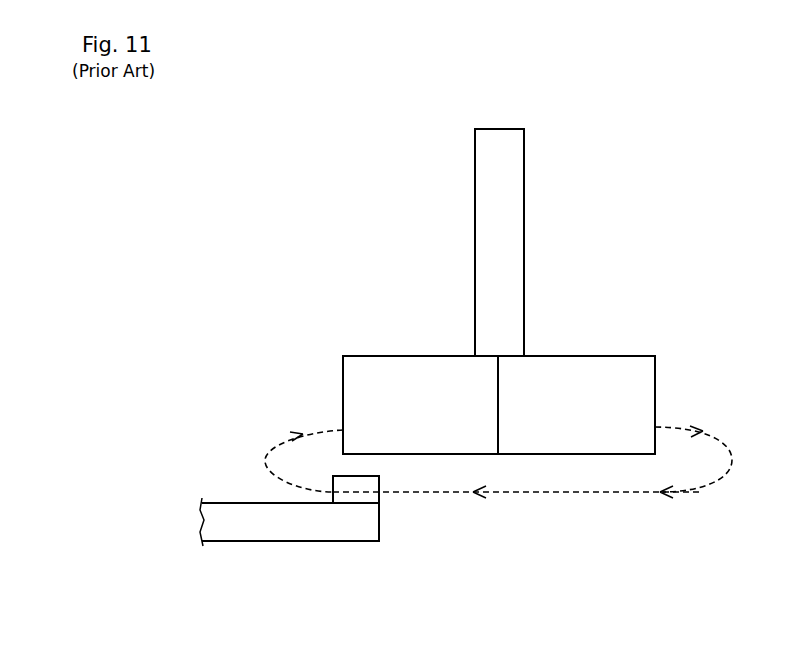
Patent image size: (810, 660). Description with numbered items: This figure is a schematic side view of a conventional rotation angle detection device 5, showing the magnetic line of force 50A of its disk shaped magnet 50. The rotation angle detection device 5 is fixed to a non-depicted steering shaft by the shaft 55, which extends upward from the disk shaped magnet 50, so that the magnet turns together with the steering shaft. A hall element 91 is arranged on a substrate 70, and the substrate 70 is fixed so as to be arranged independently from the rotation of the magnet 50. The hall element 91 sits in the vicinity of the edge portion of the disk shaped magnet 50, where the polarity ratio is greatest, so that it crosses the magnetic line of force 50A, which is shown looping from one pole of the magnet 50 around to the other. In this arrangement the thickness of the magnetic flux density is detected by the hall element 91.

The rotation angle detection device 5 is at (600, 200).
The shaft 55 is at (525, 146).
The disk shaped magnet 50 is at (620, 356).
The magnetic line of force 50A is at (590, 492).
The substrate 70 is at (323, 541).
The hall element 91 is at (379, 498).